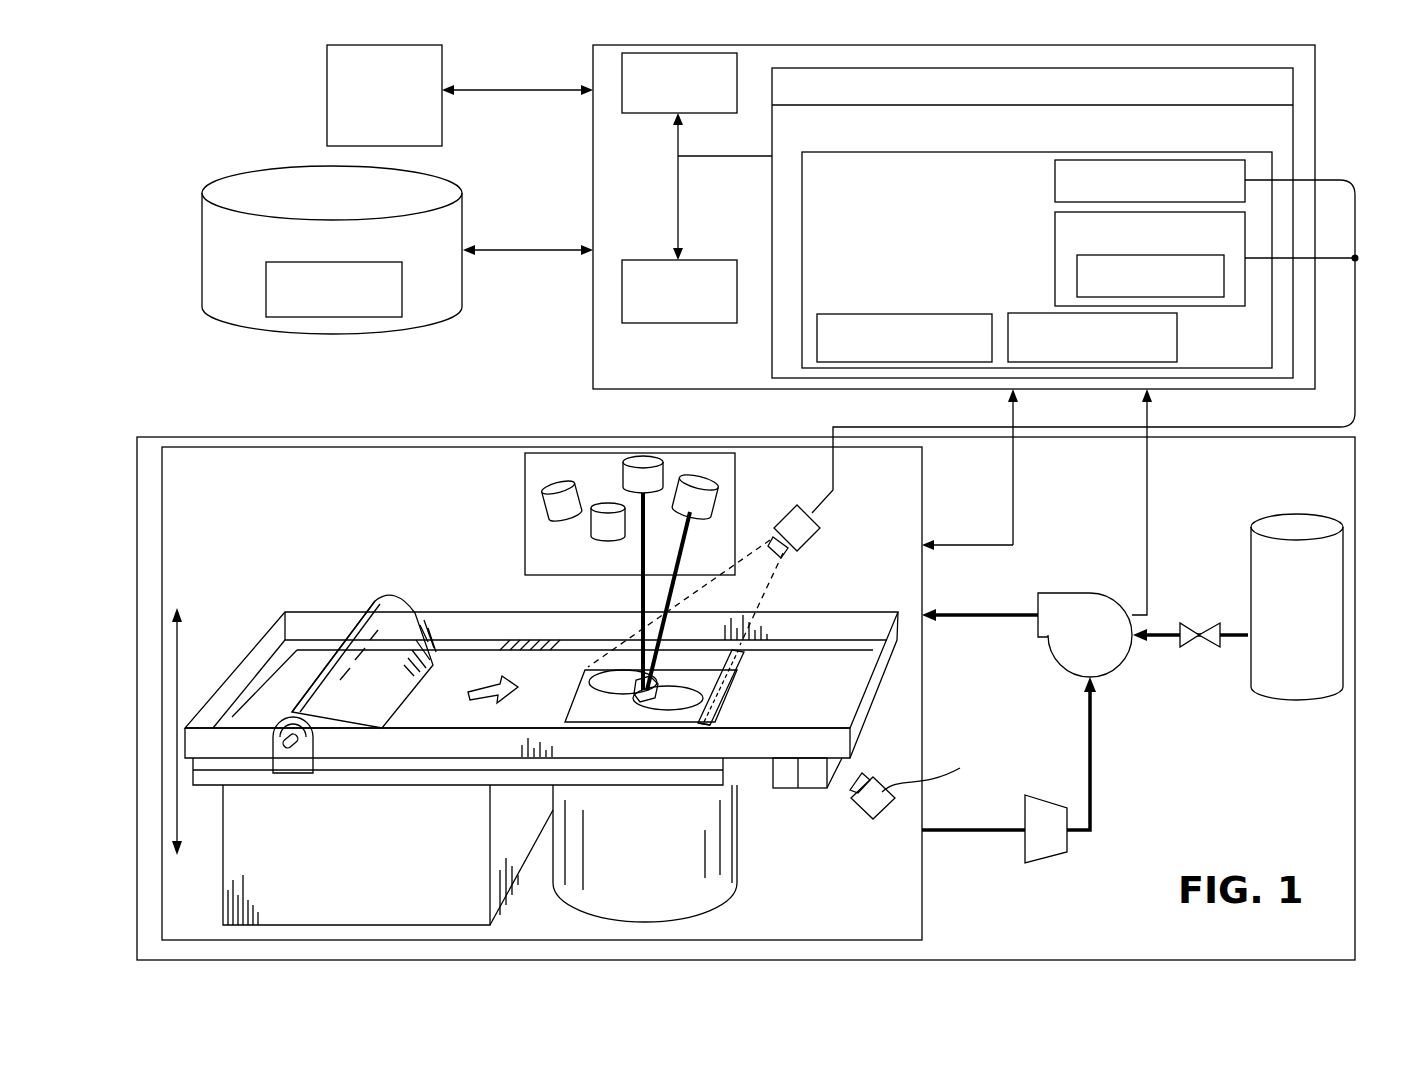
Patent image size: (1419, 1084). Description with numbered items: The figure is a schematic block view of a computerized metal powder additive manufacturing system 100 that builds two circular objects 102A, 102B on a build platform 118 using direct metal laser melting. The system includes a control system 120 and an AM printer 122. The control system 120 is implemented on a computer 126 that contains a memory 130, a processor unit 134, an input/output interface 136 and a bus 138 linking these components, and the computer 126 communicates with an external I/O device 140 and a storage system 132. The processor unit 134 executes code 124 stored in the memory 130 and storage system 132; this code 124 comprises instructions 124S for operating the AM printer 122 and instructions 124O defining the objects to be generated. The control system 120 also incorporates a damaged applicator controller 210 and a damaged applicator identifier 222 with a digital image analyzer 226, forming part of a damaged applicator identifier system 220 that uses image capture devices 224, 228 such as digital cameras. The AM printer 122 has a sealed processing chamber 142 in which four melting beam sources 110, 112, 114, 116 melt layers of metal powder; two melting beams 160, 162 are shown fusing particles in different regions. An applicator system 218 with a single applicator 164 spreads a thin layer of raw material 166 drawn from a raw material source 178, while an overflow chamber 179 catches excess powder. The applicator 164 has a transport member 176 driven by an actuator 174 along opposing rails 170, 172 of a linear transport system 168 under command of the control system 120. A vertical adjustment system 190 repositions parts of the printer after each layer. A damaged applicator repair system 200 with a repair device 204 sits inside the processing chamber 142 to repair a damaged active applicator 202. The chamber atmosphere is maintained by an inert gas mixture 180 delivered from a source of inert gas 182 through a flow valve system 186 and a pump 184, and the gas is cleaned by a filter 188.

The additive manufacturing system 100 is at (242, 76).
The I/O device 140 is at (405, 133).
The storage system 132 is at (446, 252).
The code 124 is at (387, 302).
The computer 126 is at (1280, 52).
The processor unit 134 is at (722, 97).
The input/output interface 136 is at (722, 307).
The bus 138 is at (752, 157).
The memory 130 is at (950, 102).
The control system 120 is at (1010, 138).
The set of computer-executable instructions for operating AM printer 124S is at (975, 352).
The set of computer-executable instructions defining objects 124O is at (1161, 350).
The damaged applicator controller 210 is at (1234, 192).
The damaged applicator identifier 222 is at (1227, 243).
The defect identification and analysis module 226 is at (1202, 288).
The damaged applicator identifier system 220 is at (1355, 358).
The AM printer 122 is at (124, 498).
The processing chamber 142 is at (162, 585).
The vertical adjustment system 190 is at (175, 642).
The melting beam source 110 is at (629, 514).
The melting beam source 112 is at (632, 477).
The melting beam source 114 is at (598, 528).
The melting beam source 116 is at (553, 510).
The melting beam 160 is at (683, 558).
The melting beam 162 is at (645, 618).
The image capture device 228 is at (820, 515).
The rail 172 is at (328, 618).
The rail 170 is at (222, 740).
The object 102A is at (580, 672).
The object 102B is at (690, 695).
The build platform 118 is at (725, 690).
The overflow chamber 179 is at (707, 720).
The applicator 164 is at (364, 631).
The damaged active applicator 202 is at (385, 620).
The applicator system 218 is at (348, 612).
The raw material 166 is at (530, 677).
The actuator 174 is at (296, 750).
The linear transport system 168 is at (252, 743).
The raw material source 178 is at (380, 861).
The transport member 176 is at (362, 702).
The repair device 204 is at (785, 780).
The damaged applicator repair system 200 is at (840, 810).
The image capture device 224 is at (939, 769).
The inert gas mixture 180 is at (970, 617).
The pump 184 is at (1109, 643).
The flow valve system 186 is at (1205, 626).
The source of inert gas 182 is at (1318, 654).
The filter 188 is at (1045, 838).